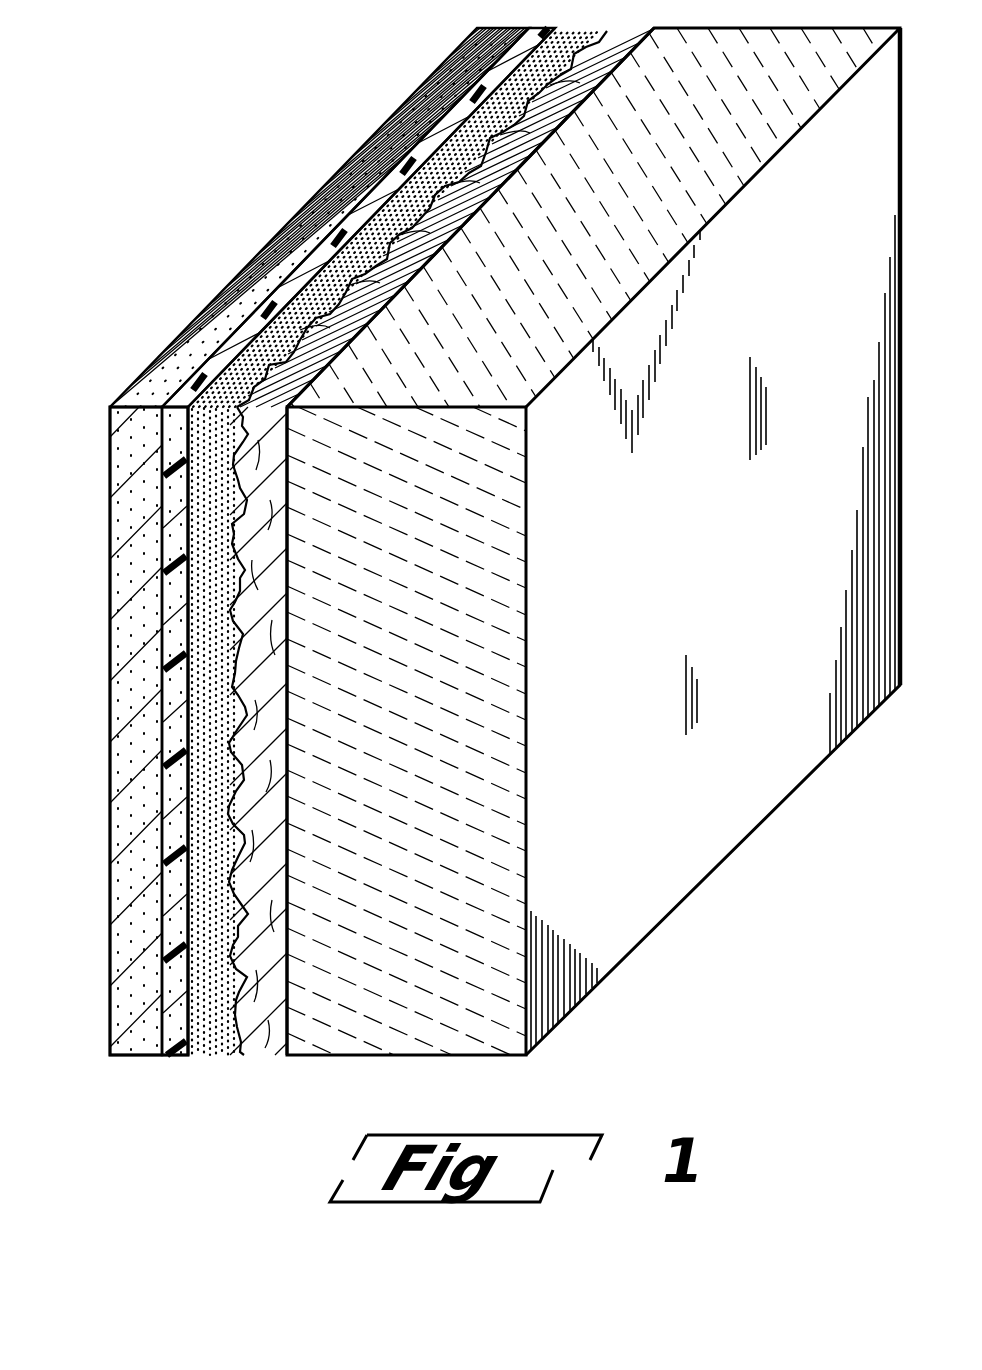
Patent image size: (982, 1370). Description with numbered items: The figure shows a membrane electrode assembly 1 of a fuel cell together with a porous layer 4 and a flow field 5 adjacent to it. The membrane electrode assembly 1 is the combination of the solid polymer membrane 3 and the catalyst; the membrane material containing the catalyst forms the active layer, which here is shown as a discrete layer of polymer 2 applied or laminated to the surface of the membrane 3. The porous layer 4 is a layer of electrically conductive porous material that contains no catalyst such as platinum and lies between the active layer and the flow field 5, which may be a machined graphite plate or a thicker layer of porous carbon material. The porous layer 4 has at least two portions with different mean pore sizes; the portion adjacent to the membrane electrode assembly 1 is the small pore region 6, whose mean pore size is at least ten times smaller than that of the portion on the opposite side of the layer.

The membrane electrode assembly 1 is at (187, 1118).
The discrete layer of polymer 2 is at (185, 780).
The membrane 3 is at (133, 623).
The porous layer 4 is at (287, 1067).
The flow field 5 is at (505, 1062).
The small pore region 6 is at (207, 497).